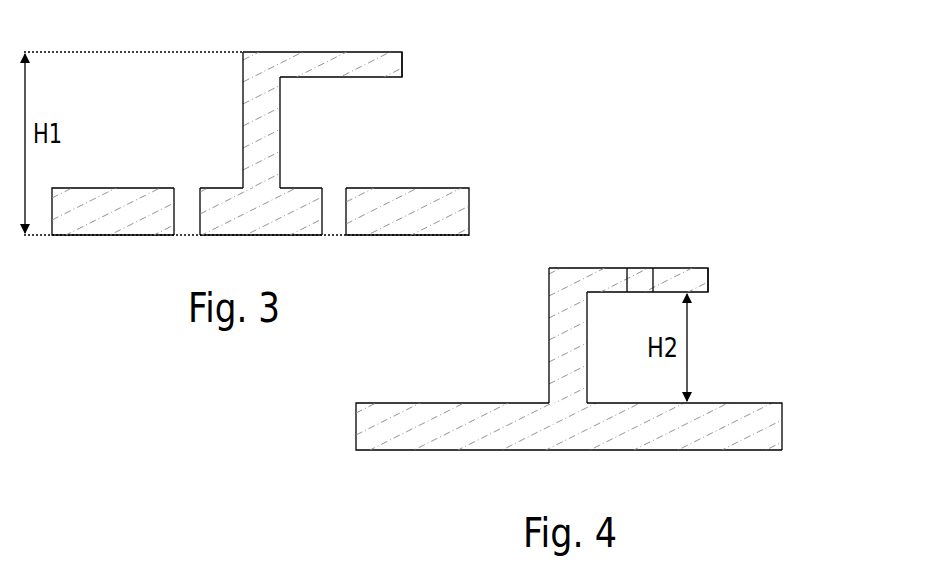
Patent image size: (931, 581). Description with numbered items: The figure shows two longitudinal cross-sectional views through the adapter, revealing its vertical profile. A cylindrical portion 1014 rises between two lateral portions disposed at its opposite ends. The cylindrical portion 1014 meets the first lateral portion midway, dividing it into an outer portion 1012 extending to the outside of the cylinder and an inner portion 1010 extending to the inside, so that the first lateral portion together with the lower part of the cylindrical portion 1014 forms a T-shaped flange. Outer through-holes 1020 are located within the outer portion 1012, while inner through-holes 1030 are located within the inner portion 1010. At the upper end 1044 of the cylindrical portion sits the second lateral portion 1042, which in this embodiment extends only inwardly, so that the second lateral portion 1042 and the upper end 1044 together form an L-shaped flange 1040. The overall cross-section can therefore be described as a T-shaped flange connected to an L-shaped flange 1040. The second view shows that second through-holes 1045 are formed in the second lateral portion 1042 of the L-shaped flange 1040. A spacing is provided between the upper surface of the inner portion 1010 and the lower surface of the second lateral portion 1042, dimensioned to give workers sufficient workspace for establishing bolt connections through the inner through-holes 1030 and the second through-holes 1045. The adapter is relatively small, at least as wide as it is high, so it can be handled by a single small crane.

In FIG. 3, the inner portion of first lateral portion 1010 is at (447, 197).
In FIG. 4, the inner portion of first lateral portion 1010 is at (752, 408).
In FIG. 3, the outer portion of first lateral portion 1012 is at (123, 225).
In FIG. 4, the outer portion of first lateral portion 1012 is at (472, 430).
In FIG. 3, the cylindrical portion 1014 is at (248, 162).
In FIG. 4, the cylindrical portion 1014 is at (553, 373).
In FIG. 3, the outer through-holes 1020 is at (187, 193).
In FIG. 3, the inner through-holes 1030 is at (335, 192).
In FIG. 3, the L-shaped flange 1040 is at (258, 72).
In FIG. 4, the L-shaped flange 1040 is at (558, 290).
In FIG. 3, the second lateral portion 1042 is at (393, 70).
In FIG. 4, the second lateral portion 1042 is at (698, 282).
In FIG. 3, the upper end of cylindrical portion 1044 is at (265, 105).
In FIG. 4, the second through-holes 1045 is at (643, 272).